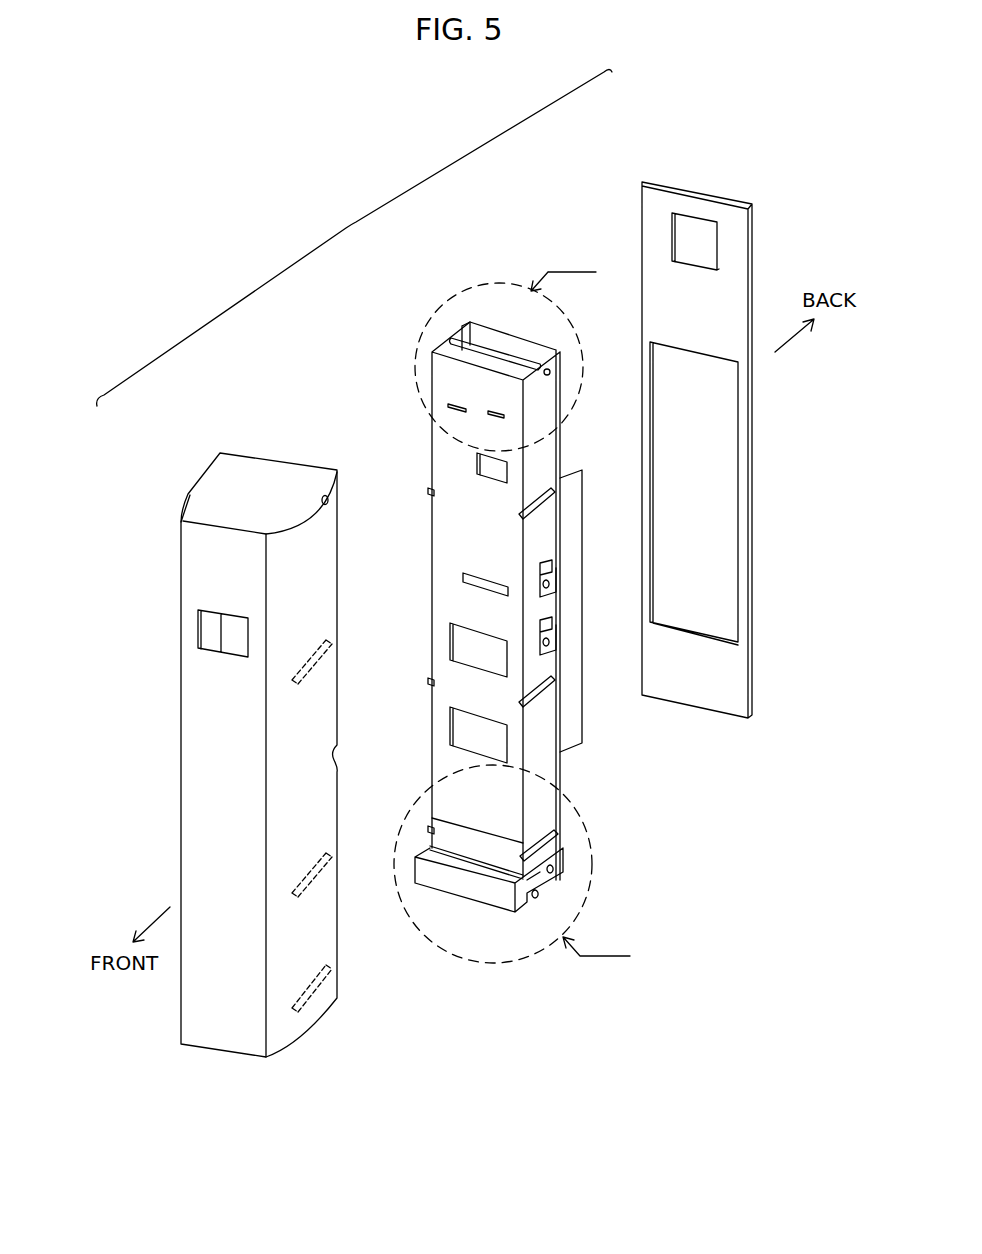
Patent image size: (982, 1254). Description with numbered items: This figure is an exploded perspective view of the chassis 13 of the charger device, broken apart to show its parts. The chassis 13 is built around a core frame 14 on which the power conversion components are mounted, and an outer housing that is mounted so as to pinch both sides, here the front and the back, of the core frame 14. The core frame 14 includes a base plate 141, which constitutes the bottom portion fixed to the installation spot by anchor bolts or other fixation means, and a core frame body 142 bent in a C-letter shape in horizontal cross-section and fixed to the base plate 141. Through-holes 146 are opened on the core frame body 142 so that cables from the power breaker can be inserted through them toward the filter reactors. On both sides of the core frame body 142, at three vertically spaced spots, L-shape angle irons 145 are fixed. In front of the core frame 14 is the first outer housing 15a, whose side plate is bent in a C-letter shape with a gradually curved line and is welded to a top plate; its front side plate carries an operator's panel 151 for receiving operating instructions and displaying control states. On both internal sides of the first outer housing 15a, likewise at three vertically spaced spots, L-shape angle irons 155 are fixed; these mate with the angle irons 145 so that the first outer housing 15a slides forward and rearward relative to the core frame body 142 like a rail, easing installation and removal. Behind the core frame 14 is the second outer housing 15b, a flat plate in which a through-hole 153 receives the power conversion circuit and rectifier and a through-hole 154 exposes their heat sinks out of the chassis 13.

The chassis 13 is at (348, 219).
The core frame 14 is at (508, 606).
The first outer housing 15a is at (168, 492).
The second outer housing 15b is at (630, 178).
The base plate 141 is at (497, 897).
The core frame body 142 is at (447, 602).
The L-shape angle irons 145 is at (428, 488).
The through-holes 146 is at (477, 468).
The operator's panel 151 is at (198, 630).
The through-hole 153 is at (672, 240).
The through-hole 154 is at (650, 430).
The L-shape angle irons 155 is at (316, 668).